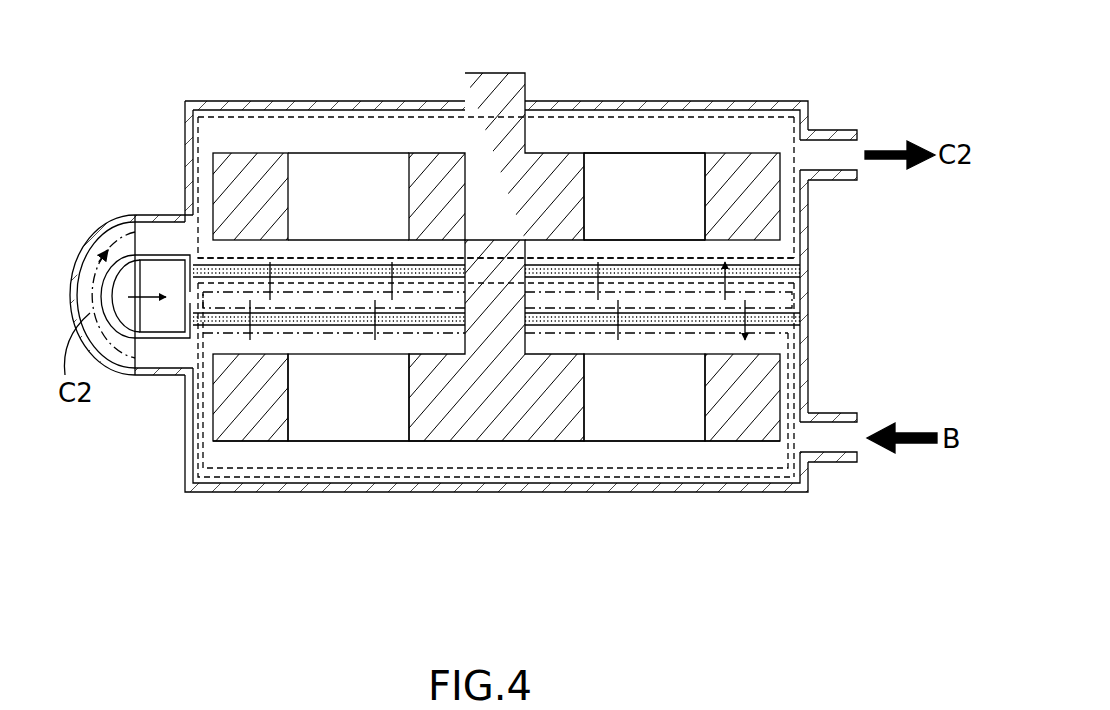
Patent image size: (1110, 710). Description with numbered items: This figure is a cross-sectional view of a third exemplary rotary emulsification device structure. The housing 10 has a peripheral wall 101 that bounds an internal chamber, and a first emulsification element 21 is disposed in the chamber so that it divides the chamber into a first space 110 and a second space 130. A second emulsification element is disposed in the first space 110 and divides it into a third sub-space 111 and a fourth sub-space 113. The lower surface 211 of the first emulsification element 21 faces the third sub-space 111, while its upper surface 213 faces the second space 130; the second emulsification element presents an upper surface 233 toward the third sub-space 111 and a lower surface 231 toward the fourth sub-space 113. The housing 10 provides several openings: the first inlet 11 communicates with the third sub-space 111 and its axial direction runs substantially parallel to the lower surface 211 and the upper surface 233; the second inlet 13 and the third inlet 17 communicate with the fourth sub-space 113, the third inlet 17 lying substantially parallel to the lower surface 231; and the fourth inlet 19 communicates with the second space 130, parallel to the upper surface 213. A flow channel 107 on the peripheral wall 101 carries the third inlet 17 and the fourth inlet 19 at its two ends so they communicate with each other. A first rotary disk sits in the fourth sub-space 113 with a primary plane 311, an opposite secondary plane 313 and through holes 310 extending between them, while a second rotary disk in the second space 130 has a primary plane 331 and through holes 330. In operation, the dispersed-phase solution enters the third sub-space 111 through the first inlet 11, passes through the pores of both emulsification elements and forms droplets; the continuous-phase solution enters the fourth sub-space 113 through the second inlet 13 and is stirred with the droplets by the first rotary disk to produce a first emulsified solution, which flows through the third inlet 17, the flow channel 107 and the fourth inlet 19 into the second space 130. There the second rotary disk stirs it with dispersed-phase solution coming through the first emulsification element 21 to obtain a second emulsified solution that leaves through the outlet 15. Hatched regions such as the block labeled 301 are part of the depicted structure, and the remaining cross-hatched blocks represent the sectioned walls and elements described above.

The housing 10 is at (794, 502).
The peripheral wall 101 is at (184, 131).
The fourth inlet 19 is at (185, 241).
The first inlet 11 is at (188, 297).
The third inlet 17 is at (188, 350).
The flow channel 107 is at (120, 373).
The third sub-space 111 is at (208, 310).
The first space 110 is at (796, 373).
The fourth sub-space 113 is at (248, 470).
The second space 130 is at (397, 117).
The outlet 15 is at (846, 153).
The second inlet 13 is at (848, 443).
The lower surface 211 is at (788, 273).
The upper surface 213 is at (782, 262).
The lower surface 231 is at (774, 309).
The upper surface 233 is at (780, 328).
The upper left block 301 is at (263, 152).
The primary plane 331 is at (555, 152).
The through holes 330 is at (643, 180).
The first emulsification element 21 is at (425, 448).
The through holes 310 is at (325, 420).
The primary plane 311 is at (568, 355).
The secondary plane 313 is at (752, 441).